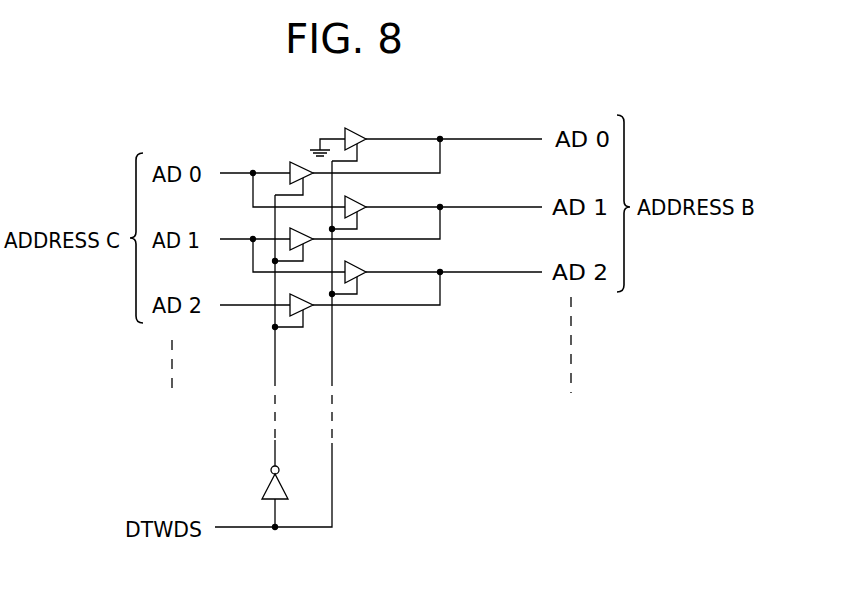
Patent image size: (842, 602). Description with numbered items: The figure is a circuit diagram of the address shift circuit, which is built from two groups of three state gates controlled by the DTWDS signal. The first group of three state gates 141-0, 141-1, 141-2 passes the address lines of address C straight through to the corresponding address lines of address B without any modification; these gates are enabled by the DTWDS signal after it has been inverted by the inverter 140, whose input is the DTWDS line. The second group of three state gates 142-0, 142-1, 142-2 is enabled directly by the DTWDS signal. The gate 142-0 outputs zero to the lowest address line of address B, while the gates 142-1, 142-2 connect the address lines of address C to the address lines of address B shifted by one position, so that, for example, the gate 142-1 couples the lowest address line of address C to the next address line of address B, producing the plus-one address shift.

The inverter 140 is at (270, 486).
The three state gate 141-0 is at (300, 162).
The three state gate 141-1 is at (308, 243).
The three state gate 141-2 is at (310, 308).
The three state gate 142-0 is at (357, 128).
The three state gate 142-1 is at (357, 196).
The three state gate 142-2 is at (363, 277).